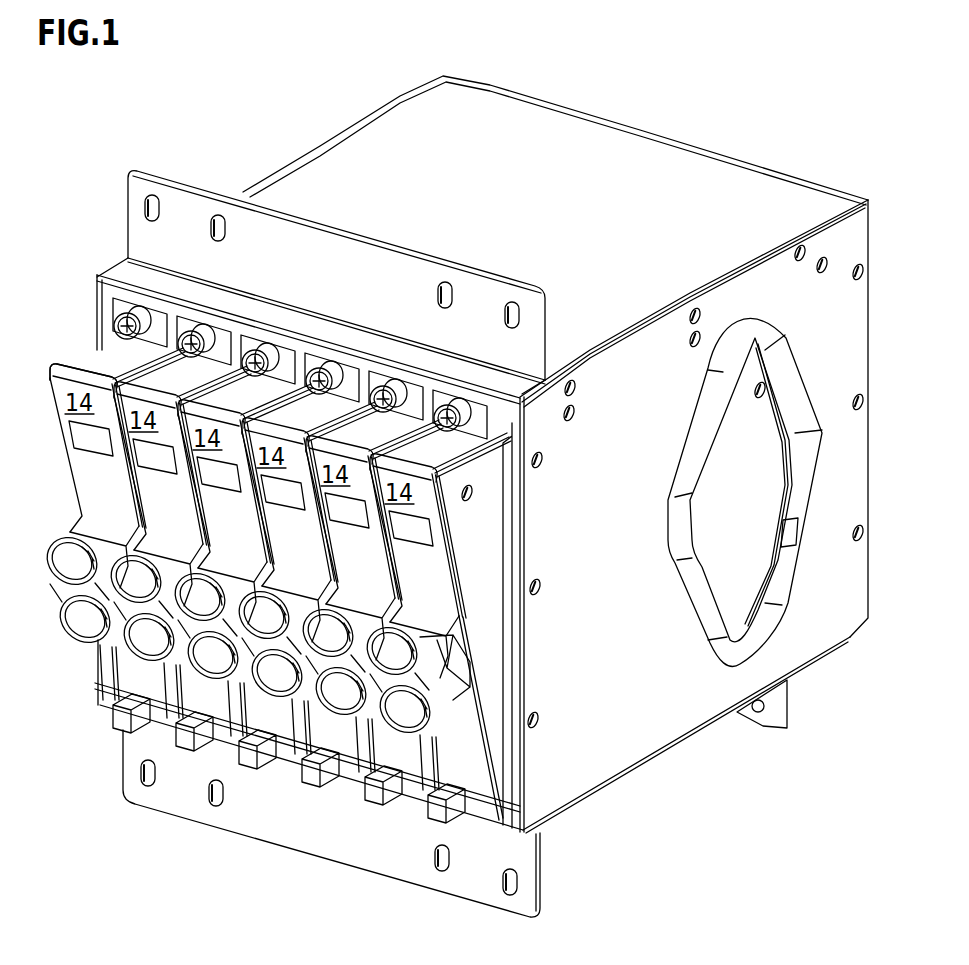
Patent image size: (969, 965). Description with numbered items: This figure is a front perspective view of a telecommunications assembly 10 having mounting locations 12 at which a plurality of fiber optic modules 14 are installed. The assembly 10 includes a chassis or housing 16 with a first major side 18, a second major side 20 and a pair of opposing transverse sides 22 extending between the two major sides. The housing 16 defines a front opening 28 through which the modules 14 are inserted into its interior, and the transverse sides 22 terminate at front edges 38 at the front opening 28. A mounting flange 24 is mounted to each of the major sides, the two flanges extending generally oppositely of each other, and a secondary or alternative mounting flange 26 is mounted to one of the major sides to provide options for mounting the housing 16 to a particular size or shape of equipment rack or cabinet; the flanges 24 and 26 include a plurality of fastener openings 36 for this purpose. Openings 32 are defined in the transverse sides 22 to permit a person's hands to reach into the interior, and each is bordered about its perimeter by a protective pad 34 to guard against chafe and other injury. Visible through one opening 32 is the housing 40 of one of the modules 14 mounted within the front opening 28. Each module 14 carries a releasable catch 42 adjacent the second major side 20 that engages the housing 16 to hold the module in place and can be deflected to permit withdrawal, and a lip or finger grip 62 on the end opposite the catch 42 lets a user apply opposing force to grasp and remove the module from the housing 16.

The telecommunications assembly 10 is at (478, 472).
The mounting locations 12 is at (208, 317).
The modules 14 is at (280, 589).
The housing 16 is at (415, 96).
The first major side 18 is at (560, 135).
The second major side 20 is at (585, 791).
The transverse sides 22 is at (358, 118).
The mounting flange 24 is at (260, 222).
The alternative mounting flange 26 is at (775, 718).
The front opening 28 is at (500, 663).
The openings 32 is at (752, 529).
The protective pad 34 is at (805, 488).
The fastener openings 36 is at (227, 230).
The front edges 38 is at (528, 529).
The housing of module 40 is at (755, 410).
The releasable catch 42 is at (115, 721).
The finger grip 62 is at (62, 368).